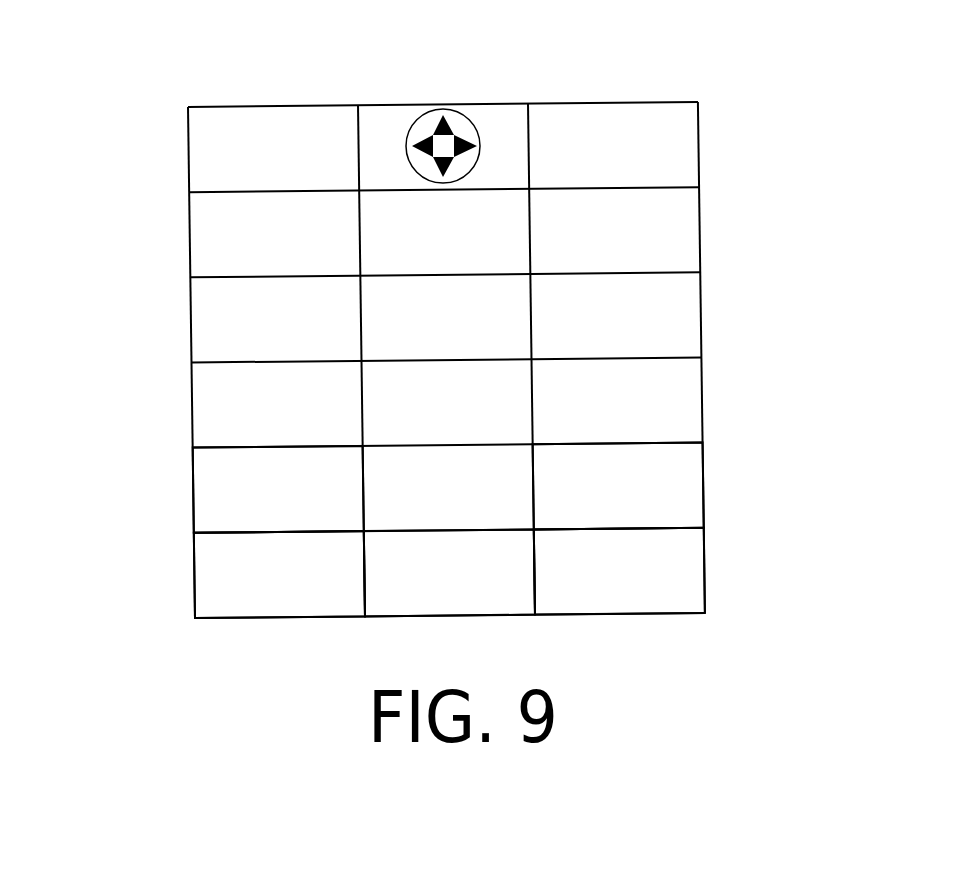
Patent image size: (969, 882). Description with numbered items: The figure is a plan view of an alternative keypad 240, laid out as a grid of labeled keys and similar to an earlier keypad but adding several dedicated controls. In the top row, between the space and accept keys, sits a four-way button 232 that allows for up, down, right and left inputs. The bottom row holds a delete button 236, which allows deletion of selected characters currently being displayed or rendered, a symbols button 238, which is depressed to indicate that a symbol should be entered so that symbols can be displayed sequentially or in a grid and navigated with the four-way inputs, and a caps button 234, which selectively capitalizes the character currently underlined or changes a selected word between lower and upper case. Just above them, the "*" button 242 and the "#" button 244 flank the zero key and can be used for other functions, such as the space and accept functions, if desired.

The keypad 240 is at (130, 134).
The four-way button 232 is at (442, 115).
The "*" button 242 is at (233, 492).
The "#" button 244 is at (682, 484).
The "caps" button 234 is at (673, 571).
The "delete" button 236 is at (280, 598).
The "symbols" button 238 is at (472, 595).